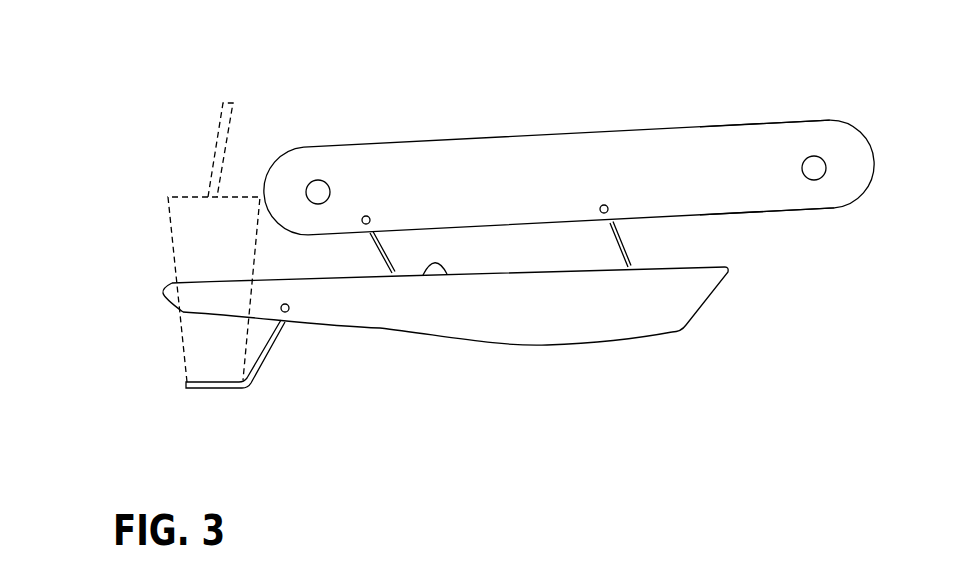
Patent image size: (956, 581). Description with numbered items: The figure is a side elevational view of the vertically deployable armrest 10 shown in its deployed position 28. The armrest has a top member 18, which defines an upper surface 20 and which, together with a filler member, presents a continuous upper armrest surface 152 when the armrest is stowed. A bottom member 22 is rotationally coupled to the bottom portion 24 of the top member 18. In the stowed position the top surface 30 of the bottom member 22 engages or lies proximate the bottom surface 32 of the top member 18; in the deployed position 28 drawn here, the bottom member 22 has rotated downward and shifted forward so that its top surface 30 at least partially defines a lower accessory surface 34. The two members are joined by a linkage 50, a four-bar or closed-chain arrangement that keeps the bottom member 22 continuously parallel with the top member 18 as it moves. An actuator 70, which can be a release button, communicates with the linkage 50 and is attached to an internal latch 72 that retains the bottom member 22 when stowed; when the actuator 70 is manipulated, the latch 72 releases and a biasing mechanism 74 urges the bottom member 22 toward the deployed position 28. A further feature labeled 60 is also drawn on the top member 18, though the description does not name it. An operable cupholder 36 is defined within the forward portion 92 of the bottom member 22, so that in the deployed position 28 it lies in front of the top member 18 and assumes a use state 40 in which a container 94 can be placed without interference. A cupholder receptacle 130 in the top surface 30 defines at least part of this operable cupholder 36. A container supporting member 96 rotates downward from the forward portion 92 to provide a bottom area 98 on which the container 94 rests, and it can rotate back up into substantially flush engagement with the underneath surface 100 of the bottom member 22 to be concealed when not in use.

The vertically deployable armrest 10 is at (371, 99).
The top member 18 is at (727, 170).
The upper surface 20 is at (557, 135).
The bottom member 22 is at (655, 312).
The bottom portion 24 is at (798, 219).
The deployed position 28 is at (797, 95).
The top surface 30 is at (712, 267).
The bottom surface 32 is at (507, 226).
The lower accessory surface 34 is at (421, 276).
The operable cupholder 36 is at (154, 306).
The use state 40 is at (156, 382).
The linkage 50 is at (613, 240).
The pivot hole 60 is at (811, 157).
The actuator 70 is at (320, 180).
The internal latch 72 is at (532, 214).
The biasing mechanism 74 is at (605, 198).
The forward portion 92 is at (280, 342).
The container 94 is at (170, 218).
The container supporting member 96 is at (205, 388).
The bottom area 98 is at (232, 381).
The underneath surface 100 is at (307, 323).
The cupholder receptacle 130 is at (153, 251).
The continuous upper armrest surface 152 is at (492, 138).